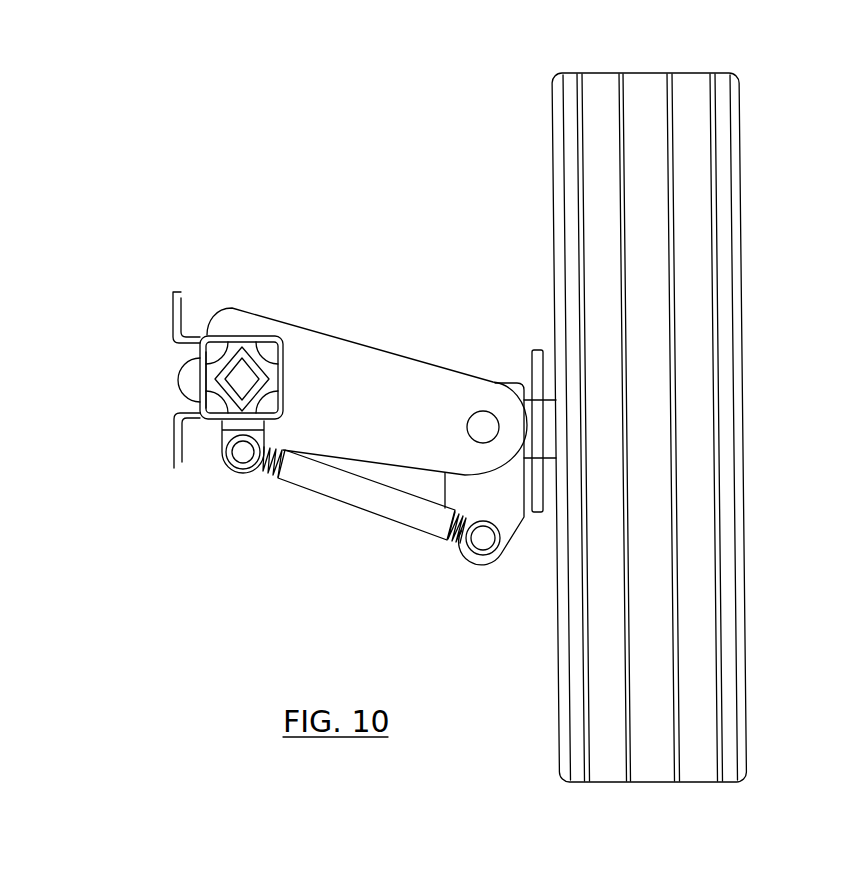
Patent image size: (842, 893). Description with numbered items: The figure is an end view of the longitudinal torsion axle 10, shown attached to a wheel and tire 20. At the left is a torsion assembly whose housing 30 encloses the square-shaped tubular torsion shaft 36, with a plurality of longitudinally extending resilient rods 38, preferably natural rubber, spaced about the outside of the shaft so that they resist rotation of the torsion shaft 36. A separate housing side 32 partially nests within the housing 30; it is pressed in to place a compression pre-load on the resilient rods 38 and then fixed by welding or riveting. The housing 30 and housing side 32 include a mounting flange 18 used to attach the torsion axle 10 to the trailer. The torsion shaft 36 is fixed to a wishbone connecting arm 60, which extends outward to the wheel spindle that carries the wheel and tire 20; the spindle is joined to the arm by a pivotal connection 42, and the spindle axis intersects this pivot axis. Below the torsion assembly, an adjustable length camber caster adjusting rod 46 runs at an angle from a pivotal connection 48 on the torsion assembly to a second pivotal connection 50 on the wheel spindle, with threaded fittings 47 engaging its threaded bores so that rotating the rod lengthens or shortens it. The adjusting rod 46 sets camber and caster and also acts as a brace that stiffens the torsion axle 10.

The torsion axle 10 is at (285, 155).
The mounting flange 18 is at (165, 290).
The wheel and tire 20 is at (695, 232).
The housing 30 is at (263, 337).
The housing side 32 is at (200, 387).
The torsion shaft 36 is at (242, 347).
The resilient rods 38 is at (217, 357).
The pivotal connection 42 is at (482, 427).
The adjusting rod 46 is at (352, 498).
The threaded fittings 47 is at (267, 473).
The pivotal connection 48 is at (234, 480).
The second pivotal connection 50 is at (474, 566).
The wishbone connecting arm 60 is at (366, 382).